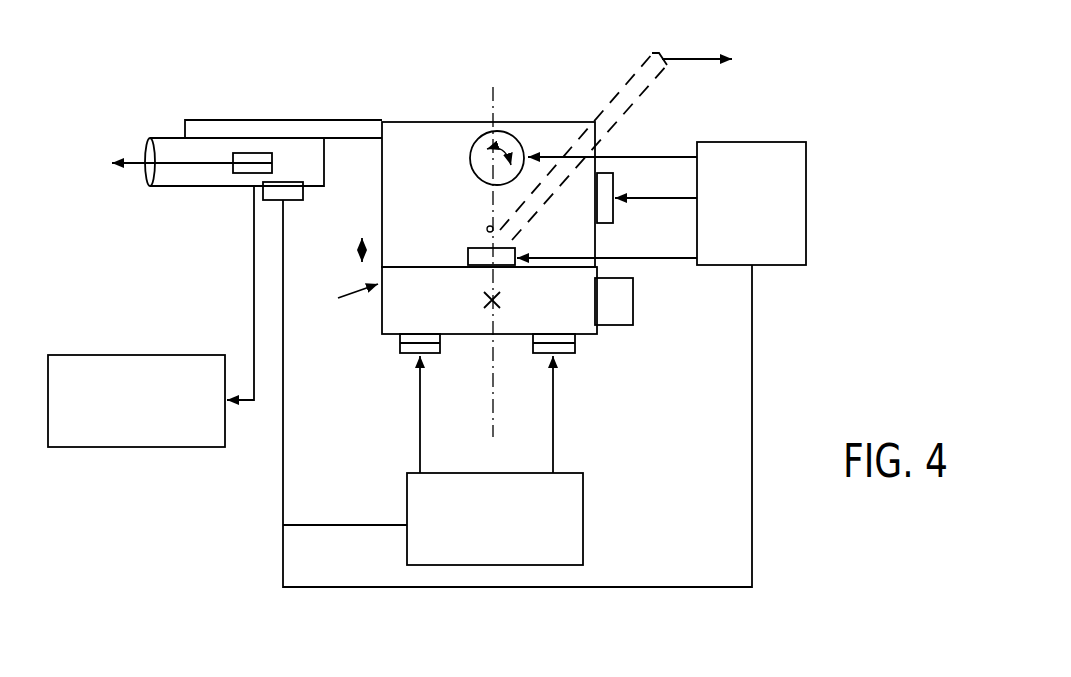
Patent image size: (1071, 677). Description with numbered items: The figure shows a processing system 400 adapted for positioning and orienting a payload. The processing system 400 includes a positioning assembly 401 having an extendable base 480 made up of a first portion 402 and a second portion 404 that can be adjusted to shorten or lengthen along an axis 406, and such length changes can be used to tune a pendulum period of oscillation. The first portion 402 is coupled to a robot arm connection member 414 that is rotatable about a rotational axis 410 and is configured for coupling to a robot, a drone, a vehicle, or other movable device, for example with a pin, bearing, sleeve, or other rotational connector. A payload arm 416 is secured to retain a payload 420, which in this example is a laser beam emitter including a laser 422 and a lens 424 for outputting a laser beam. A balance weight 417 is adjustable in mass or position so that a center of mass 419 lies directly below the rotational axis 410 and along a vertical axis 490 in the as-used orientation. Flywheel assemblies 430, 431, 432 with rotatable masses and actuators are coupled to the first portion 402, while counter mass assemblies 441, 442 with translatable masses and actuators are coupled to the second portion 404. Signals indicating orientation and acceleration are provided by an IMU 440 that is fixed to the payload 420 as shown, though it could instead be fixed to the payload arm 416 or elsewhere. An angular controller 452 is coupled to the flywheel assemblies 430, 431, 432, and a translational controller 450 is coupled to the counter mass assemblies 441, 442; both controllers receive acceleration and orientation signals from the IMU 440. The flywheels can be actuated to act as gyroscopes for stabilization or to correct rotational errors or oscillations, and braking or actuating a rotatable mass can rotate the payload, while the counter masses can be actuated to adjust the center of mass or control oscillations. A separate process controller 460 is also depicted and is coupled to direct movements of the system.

The processing system 400 is at (138, 537).
The positioning assembly 401 is at (557, 63).
The first portion 402 is at (435, 247).
The second portion 404 is at (447, 320).
The axis 406 is at (363, 233).
The rotational axis 410 is at (480, 241).
The robot arm connection member 414 is at (617, 112).
The payload arm 416 is at (250, 152).
The balance weight 417 is at (600, 327).
The center of mass 419 is at (496, 305).
The payload 420 is at (183, 190).
The laser 422 is at (248, 152).
The lens 424 is at (153, 190).
The flywheel assembly 430 is at (478, 136).
The flywheel assembly 431 is at (520, 248).
The flywheel assembly 432 is at (605, 223).
The IMU 440 is at (283, 182).
The counter mass assembly 441 is at (400, 365).
The counter mass assembly 442 is at (577, 355).
The translational controller 450 is at (537, 472).
The angular controller 452 is at (750, 142).
The process controller 460 is at (212, 441).
The extendable base 480 is at (338, 301).
The vertical axis 490 is at (478, 368).